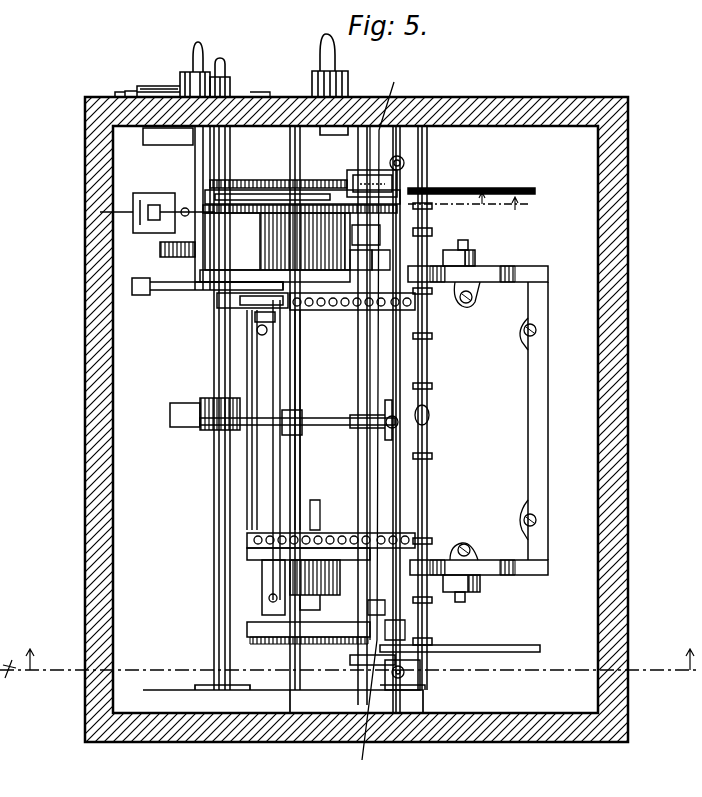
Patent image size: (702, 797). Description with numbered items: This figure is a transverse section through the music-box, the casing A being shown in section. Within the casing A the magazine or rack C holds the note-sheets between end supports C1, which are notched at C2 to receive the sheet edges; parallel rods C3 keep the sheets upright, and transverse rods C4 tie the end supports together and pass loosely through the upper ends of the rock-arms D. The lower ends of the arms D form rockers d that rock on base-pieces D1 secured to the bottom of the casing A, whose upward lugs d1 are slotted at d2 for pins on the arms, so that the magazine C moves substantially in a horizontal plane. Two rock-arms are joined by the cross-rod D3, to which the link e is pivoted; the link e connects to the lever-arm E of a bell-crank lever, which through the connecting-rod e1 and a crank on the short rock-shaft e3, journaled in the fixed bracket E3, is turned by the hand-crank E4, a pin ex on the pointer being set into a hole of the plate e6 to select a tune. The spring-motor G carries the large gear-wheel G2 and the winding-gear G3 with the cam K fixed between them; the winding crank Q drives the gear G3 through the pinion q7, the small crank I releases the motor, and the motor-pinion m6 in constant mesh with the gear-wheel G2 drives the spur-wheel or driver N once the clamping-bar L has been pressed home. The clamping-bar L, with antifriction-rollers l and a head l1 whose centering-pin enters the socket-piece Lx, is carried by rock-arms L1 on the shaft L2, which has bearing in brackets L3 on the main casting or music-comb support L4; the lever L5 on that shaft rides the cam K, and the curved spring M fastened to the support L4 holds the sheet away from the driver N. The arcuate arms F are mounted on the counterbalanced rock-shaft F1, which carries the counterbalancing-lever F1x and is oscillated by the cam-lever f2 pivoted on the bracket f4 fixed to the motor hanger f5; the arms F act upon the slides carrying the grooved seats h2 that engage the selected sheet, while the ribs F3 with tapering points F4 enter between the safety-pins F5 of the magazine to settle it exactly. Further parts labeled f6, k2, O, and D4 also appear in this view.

The casing A is at (335, 419).
The hand-crank E4 is at (190, 52).
The connecting-rod e1 is at (170, 88).
The pin ex is at (132, 81).
The plate e6 is at (117, 90).
The small crank I is at (228, 72).
The motor-winding crank Q is at (312, 74).
The brackets L3 is at (383, 429).
The counterbalanced rock-shaft F1 is at (262, 672).
The taper or point F4 is at (285, 585).
The main casting or music-comb support L4 is at (368, 362).
The clamping-bar L is at (402, 468).
The antifriction-rollers l is at (428, 362).
The head l1 is at (430, 413).
The short rock-shaft e3 is at (195, 150).
The fixed bracket E3 is at (200, 290).
The cam K is at (215, 200).
The counterbalancing-lever F1x is at (100, 212).
The spring-motor G is at (215, 232).
The winding-gear G3 is at (245, 180).
The lever L5 is at (295, 190).
The large motion-transmitting gear-wheel G2 is at (310, 205).
The pinion q7 is at (347, 180).
The roller f6 is at (280, 268).
The spur-wheel or driver N is at (359, 235).
The motor-pinion m6 is at (352, 263).
The grooved blocks or seats h2 is at (381, 263).
The light spring M is at (434, 226).
The end supports C1 is at (335, 312).
The parallel rods C3 is at (303, 312).
The support or hanger f5 is at (262, 323).
The supporting-bracket f4 is at (255, 318).
The cam-lever f2 is at (268, 308).
The link e is at (245, 412).
The lever-arm E is at (205, 432).
The cross-rod D3 is at (298, 402).
The socket-piece Lx is at (380, 432).
The transverse rods C4 is at (248, 490).
The notches C2 is at (314, 506).
The shaft L2 is at (398, 500).
The magazine or rack C is at (322, 515).
The rockers d is at (262, 590).
The block k2 is at (368, 606).
The block O is at (390, 626).
The rib F3 is at (247, 628).
The safety-pins F5 is at (350, 660).
The rock-arms L1 is at (420, 675).
The arcuate arms F is at (518, 676).
The base-pieces D1 is at (548, 272).
The lugs d1 is at (475, 258).
The slots d2 is at (468, 245).
The rock-arms D is at (473, 300).
The arm D4 is at (548, 568).